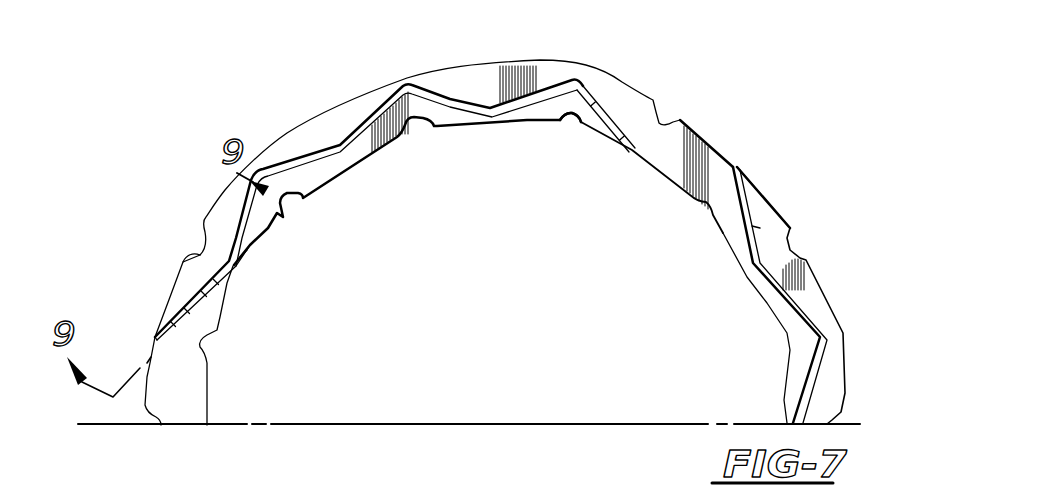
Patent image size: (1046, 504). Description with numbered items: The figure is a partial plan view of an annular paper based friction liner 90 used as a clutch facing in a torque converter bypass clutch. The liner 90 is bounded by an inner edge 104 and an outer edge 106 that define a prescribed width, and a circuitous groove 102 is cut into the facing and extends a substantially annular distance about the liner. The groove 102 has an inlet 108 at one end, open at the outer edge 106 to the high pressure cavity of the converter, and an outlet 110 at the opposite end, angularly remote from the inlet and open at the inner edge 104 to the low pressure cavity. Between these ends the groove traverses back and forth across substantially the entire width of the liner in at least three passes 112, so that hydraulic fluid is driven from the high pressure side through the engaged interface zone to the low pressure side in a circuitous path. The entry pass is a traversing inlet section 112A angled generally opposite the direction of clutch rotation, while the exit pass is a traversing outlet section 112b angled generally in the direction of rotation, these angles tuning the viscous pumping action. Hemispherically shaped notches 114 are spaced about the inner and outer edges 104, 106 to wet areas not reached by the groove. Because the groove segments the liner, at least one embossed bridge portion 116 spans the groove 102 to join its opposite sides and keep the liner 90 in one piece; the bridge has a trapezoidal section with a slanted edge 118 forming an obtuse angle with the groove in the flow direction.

The friction liner 90 is at (792, 192).
The circuitous groove 102 is at (449, 88).
The inner edge 104 is at (507, 125).
The outer edge 106 is at (607, 80).
The inlet 108 is at (738, 165).
The outlet 110 is at (633, 152).
The traversing pass 112 is at (290, 167).
The traversing inlet section 112A is at (236, 268).
The traversing outlet section 112b is at (565, 123).
The notch 114 is at (333, 121).
The bridge portion 116 is at (182, 287).
The slanted edge 118 is at (155, 341).